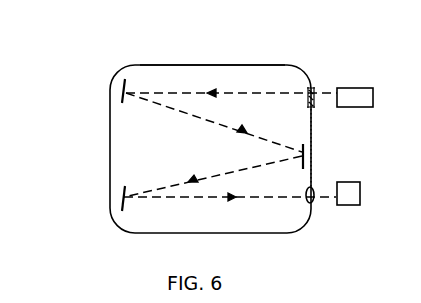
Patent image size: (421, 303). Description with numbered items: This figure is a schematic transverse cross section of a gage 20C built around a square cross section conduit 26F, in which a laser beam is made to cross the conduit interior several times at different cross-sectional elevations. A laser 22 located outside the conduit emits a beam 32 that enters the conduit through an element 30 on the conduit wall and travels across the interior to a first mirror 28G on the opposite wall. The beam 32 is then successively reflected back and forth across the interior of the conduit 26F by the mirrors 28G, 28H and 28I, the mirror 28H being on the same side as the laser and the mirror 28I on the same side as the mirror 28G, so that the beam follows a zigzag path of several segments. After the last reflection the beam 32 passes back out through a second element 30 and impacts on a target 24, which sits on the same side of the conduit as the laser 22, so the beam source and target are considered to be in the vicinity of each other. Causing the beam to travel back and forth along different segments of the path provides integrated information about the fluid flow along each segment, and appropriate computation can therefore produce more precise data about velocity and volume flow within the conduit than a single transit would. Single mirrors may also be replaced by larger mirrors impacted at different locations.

The gage 20C is at (118, 249).
The square cross section conduit 26F is at (170, 64).
The mirror 28G is at (122, 91).
The mirror 28H is at (303, 150).
The mirror 28I is at (122, 197).
The lens/window 30 is at (312, 86).
The laser 22 is at (353, 87).
The target 24 is at (347, 206).
The beam 32 is at (216, 121).